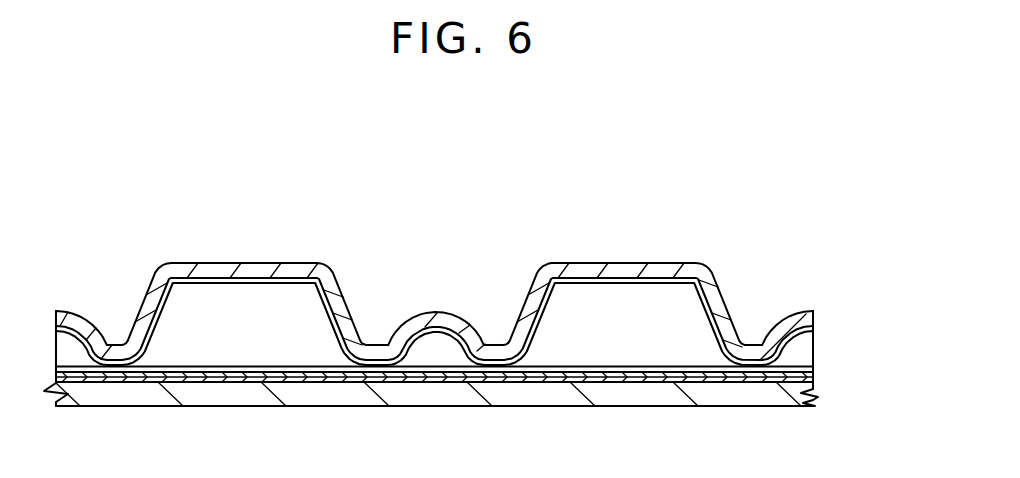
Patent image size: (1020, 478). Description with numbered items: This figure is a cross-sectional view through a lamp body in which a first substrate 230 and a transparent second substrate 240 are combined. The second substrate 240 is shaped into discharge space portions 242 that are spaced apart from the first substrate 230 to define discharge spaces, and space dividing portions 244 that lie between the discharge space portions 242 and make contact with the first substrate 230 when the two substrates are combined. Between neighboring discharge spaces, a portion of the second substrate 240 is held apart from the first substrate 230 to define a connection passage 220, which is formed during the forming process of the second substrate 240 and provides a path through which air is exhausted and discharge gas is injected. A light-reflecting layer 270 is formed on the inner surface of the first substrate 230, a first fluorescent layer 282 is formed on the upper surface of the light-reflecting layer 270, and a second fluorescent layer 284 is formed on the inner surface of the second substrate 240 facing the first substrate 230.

The connection passage 220 is at (438, 316).
The first substrate 230 is at (816, 402).
The second substrate 240 is at (473, 298).
The discharge space portion 242 is at (667, 273).
The space dividing portion 244 is at (493, 360).
The light-reflecting layer 270 is at (810, 378).
The first fluorescent layer 282 is at (810, 369).
The second fluorescent layer 284 is at (808, 330).